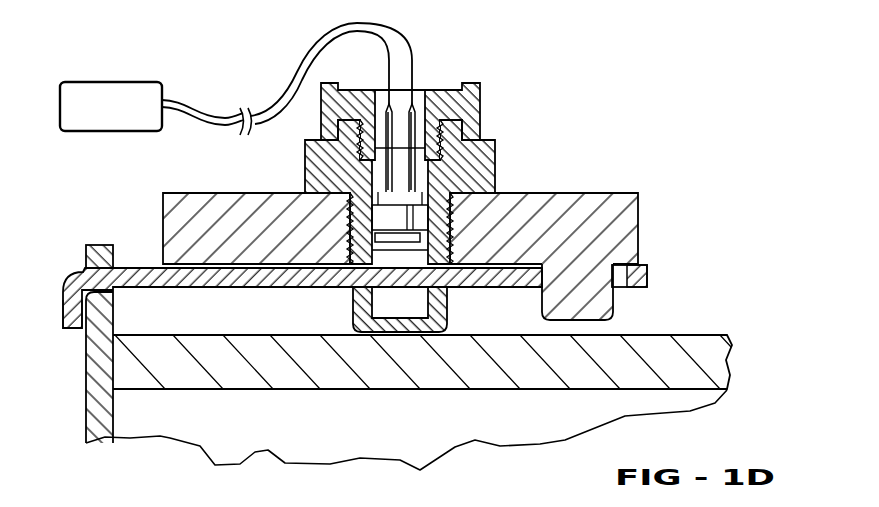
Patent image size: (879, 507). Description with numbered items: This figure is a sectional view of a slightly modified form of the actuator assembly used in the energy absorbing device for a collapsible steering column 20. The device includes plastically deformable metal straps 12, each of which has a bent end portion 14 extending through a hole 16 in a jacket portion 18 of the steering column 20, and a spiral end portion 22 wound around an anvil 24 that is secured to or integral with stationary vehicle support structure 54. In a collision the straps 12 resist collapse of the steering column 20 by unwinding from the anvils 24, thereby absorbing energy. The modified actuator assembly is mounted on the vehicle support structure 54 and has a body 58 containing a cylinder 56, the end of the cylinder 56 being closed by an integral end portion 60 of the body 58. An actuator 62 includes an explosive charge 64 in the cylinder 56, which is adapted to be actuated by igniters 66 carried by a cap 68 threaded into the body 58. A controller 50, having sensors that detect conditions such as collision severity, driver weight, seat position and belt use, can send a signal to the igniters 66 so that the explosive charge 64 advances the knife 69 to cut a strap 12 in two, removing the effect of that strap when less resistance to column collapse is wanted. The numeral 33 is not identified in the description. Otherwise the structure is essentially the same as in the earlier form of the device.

The metal strap 12 is at (143, 267).
The bent end portion 14 is at (63, 295).
The hole 16 is at (113, 288).
The jacket portion 18 is at (86, 405).
The collapsible steering column 20 is at (86, 362).
The spiral end portion 22 is at (648, 272).
The anvil 24 is at (606, 310).
The sensor assembly 33 is at (502, 161).
The controller 50 is at (121, 131).
The vehicle support structure 54 is at (625, 190).
The cylinder 56 is at (380, 296).
The body 58 is at (312, 167).
The integral end portion 60 is at (410, 300).
The actuator 62 is at (387, 222).
The explosive charge 64 is at (418, 222).
The igniter 66 is at (390, 187).
The cap 68 is at (443, 92).
The knife 69 is at (410, 240).